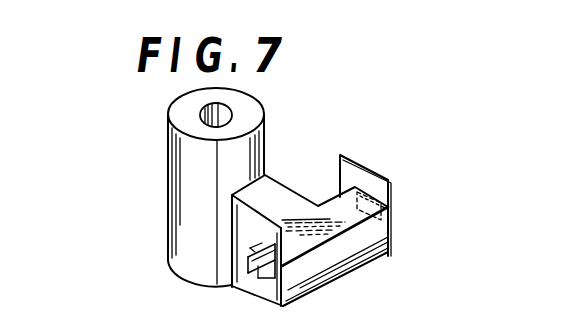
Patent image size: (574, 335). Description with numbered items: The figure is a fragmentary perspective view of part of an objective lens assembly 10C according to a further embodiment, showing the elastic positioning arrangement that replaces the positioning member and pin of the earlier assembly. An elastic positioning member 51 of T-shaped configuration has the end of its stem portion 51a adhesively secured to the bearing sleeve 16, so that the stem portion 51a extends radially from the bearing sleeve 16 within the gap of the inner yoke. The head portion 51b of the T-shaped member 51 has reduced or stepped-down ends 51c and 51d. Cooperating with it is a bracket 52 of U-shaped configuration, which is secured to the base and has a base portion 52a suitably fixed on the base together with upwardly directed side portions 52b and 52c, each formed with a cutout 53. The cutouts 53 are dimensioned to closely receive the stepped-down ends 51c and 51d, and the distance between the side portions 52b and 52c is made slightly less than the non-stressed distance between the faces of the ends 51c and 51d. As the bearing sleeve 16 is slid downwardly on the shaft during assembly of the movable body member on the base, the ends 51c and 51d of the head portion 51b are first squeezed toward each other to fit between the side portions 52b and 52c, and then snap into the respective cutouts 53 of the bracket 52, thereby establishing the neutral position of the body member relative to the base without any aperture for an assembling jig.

The objective lens assembly 10C is at (357, 138).
The bearing sleeve 16 is at (186, 151).
The elastic positioning member 51 is at (301, 184).
The stem portion 51a is at (281, 198).
The head portion 51b is at (322, 256).
The stepped-down end 51c is at (262, 274).
The stepped-down end 51d is at (390, 213).
The bracket 52 is at (305, 265).
The base portion 52a is at (357, 258).
The side portion 52b is at (243, 256).
The side portion 52c is at (424, 158).
The cutout 53 is at (385, 188).